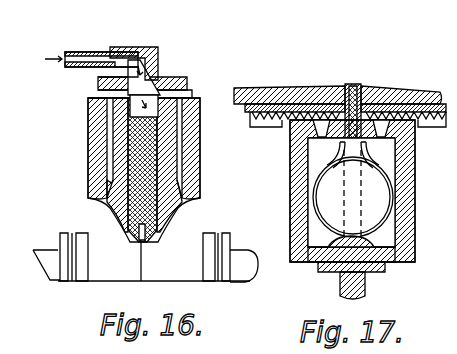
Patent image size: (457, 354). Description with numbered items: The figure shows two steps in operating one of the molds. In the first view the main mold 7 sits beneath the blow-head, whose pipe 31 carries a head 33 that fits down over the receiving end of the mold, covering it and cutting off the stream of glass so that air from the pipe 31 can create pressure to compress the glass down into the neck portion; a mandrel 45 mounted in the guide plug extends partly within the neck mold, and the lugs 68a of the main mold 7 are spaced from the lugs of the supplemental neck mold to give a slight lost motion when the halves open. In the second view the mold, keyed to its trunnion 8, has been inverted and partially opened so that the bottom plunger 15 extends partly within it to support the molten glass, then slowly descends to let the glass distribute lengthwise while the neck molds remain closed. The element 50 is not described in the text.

In FIG. 16, the pipe 31 is at (86, 52).
In FIG. 16, the head 33 is at (167, 88).
In FIG. 16, the shelf plate 50 is at (196, 95).
In FIG. 16, the main mold 7 is at (200, 173).
In FIG. 17, the main mold 7 is at (413, 188).
In FIG. 16, the mandrel 45 is at (138, 241).
In FIG. 17, the mandrel 45 is at (358, 173).
In FIG. 16, the lugs of the main molds 68a is at (58, 246).
In FIG. 17, the lugs of the main molds 68a is at (256, 116).
In FIG. 16, the trunnion 8 is at (238, 262).
In FIG. 17, the trunnion 8 is at (409, 90).
In FIG. 17, the plunger 15 is at (372, 272).